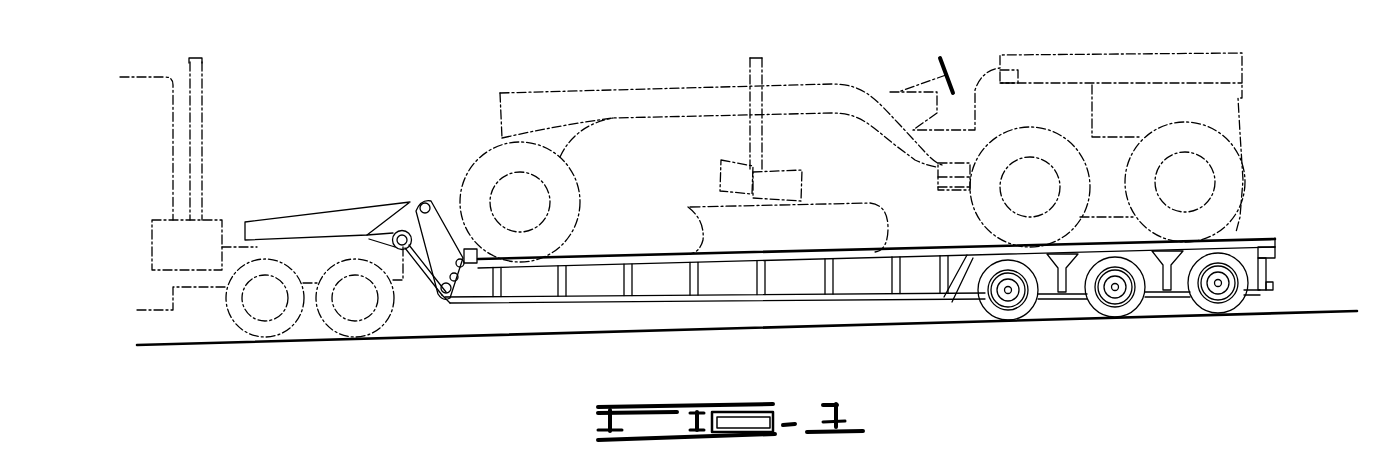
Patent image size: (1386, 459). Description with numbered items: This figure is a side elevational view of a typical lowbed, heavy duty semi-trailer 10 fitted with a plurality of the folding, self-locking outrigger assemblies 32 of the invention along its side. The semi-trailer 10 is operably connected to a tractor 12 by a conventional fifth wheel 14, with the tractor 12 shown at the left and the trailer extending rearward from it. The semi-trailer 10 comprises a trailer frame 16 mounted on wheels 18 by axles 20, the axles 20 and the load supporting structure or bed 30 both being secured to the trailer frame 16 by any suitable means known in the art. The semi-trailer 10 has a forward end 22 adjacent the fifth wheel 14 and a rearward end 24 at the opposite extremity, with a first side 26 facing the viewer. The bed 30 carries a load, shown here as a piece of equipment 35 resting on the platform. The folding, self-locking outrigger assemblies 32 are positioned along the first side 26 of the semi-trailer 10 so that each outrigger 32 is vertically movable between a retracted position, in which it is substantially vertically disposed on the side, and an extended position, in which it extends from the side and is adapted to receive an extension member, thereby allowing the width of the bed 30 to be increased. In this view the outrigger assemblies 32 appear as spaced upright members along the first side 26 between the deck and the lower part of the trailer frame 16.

The semi-trailer 10 is at (1244, 233).
The tractor 12 is at (146, 165).
The fifth wheel 14 is at (318, 243).
The trailer frame 16 is at (862, 301).
The wheels 18 is at (1082, 318).
The axles 20 is at (1006, 294).
The forward end 22 is at (473, 278).
The rearward end 24 is at (1277, 240).
The first side 26 is at (807, 288).
The load supporting structure or bed 30 is at (905, 250).
The folding, self-locking outrigger assemblies 32 is at (624, 287).
The motor grader 35 is at (1165, 105).